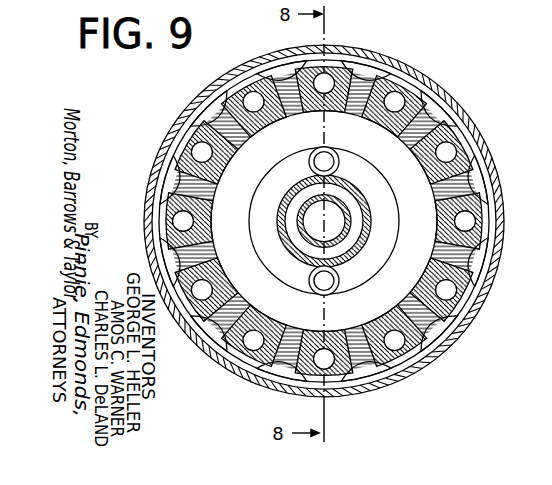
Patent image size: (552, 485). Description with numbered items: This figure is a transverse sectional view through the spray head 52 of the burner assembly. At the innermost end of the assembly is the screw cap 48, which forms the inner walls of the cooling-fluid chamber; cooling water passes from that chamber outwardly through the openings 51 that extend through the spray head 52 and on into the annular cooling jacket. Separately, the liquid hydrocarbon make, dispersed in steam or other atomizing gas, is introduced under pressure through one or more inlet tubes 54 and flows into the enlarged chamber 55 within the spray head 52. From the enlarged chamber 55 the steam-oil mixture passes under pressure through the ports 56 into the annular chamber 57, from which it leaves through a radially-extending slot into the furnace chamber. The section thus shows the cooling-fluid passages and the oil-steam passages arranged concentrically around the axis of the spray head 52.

The screw cap 48 is at (500, 197).
The annular chamber 57 is at (412, 82).
The enlarged chamber 55 is at (232, 183).
The ports 56 is at (428, 117).
The spray head 52 is at (455, 322).
The openings 51 is at (452, 292).
The inlet tubes 54 is at (332, 156).